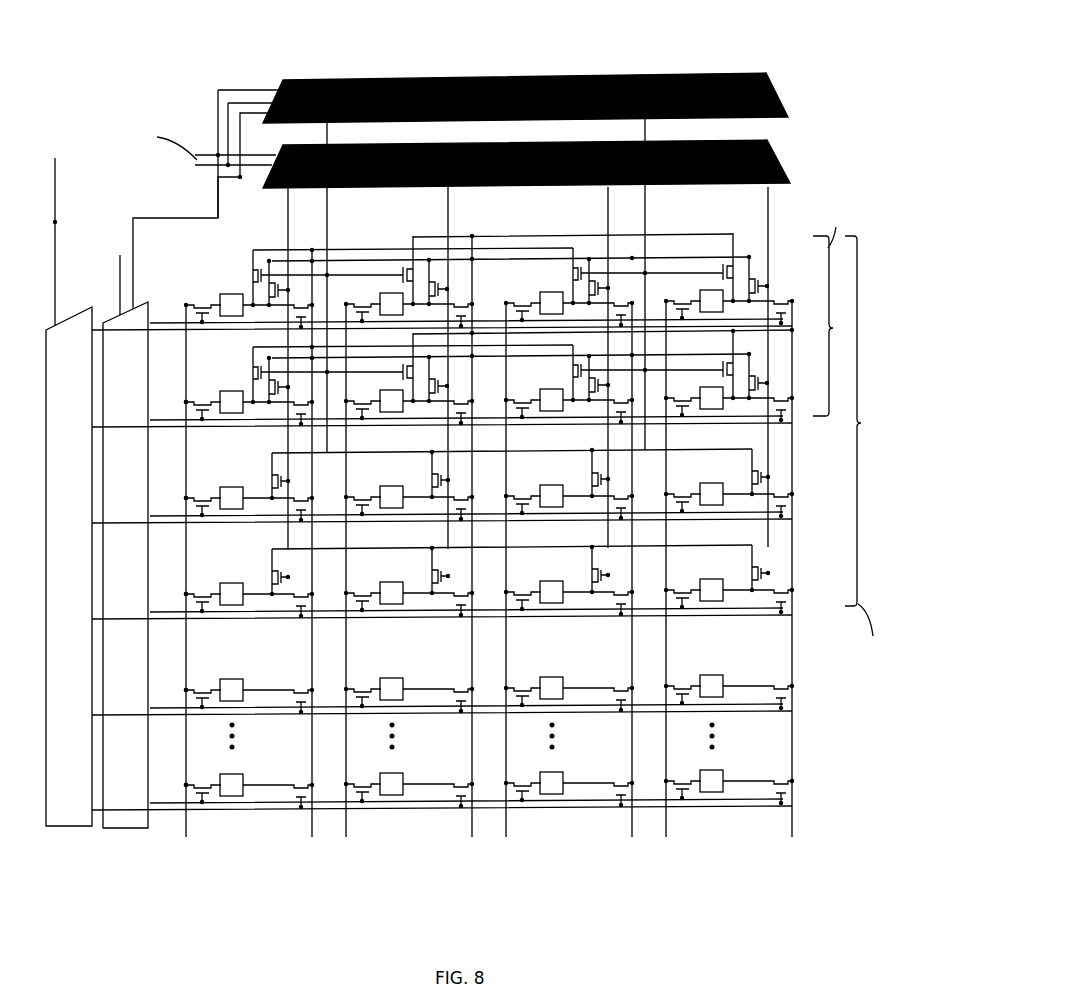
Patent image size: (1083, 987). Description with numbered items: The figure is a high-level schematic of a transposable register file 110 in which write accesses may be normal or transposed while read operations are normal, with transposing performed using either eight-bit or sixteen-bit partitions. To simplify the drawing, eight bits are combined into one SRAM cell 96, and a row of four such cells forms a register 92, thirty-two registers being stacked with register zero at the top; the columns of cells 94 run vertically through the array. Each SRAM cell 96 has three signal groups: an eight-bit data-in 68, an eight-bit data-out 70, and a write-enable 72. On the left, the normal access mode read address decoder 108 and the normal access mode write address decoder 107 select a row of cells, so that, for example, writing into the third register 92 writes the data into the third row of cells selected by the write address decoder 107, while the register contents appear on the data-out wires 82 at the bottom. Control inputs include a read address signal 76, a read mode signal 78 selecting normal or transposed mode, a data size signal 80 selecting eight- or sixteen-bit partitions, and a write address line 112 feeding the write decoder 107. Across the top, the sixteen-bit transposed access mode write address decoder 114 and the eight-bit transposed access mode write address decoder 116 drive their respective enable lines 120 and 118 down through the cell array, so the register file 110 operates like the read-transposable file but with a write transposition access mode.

The 8-bit data-in 68 is at (189, 838).
The 8-bit data-out 70 is at (738, 778).
The write-enable 72 is at (171, 319).
The read address signal 76 is at (57, 170).
The read mode signal 78 is at (118, 278).
The data size signal 80 is at (217, 88).
The data-out wires 82 is at (313, 830).
The register 92 is at (804, 289).
The register column 94 is at (712, 858).
The SRAM cell 96 is at (580, 300).
The normal access mode write address decoder 107 is at (125, 830).
The normal access mode read address decoder 108 is at (68, 830).
The transposable register file 110 is at (768, 48).
The write address line 112 is at (132, 206).
The 16-bit transposed access mode write address decoder 114 is at (462, 75).
The 8-bit transposed access mode write address decoder 116 is at (784, 164).
The enable lines 118 is at (288, 236).
The enable lines 120 is at (329, 236).